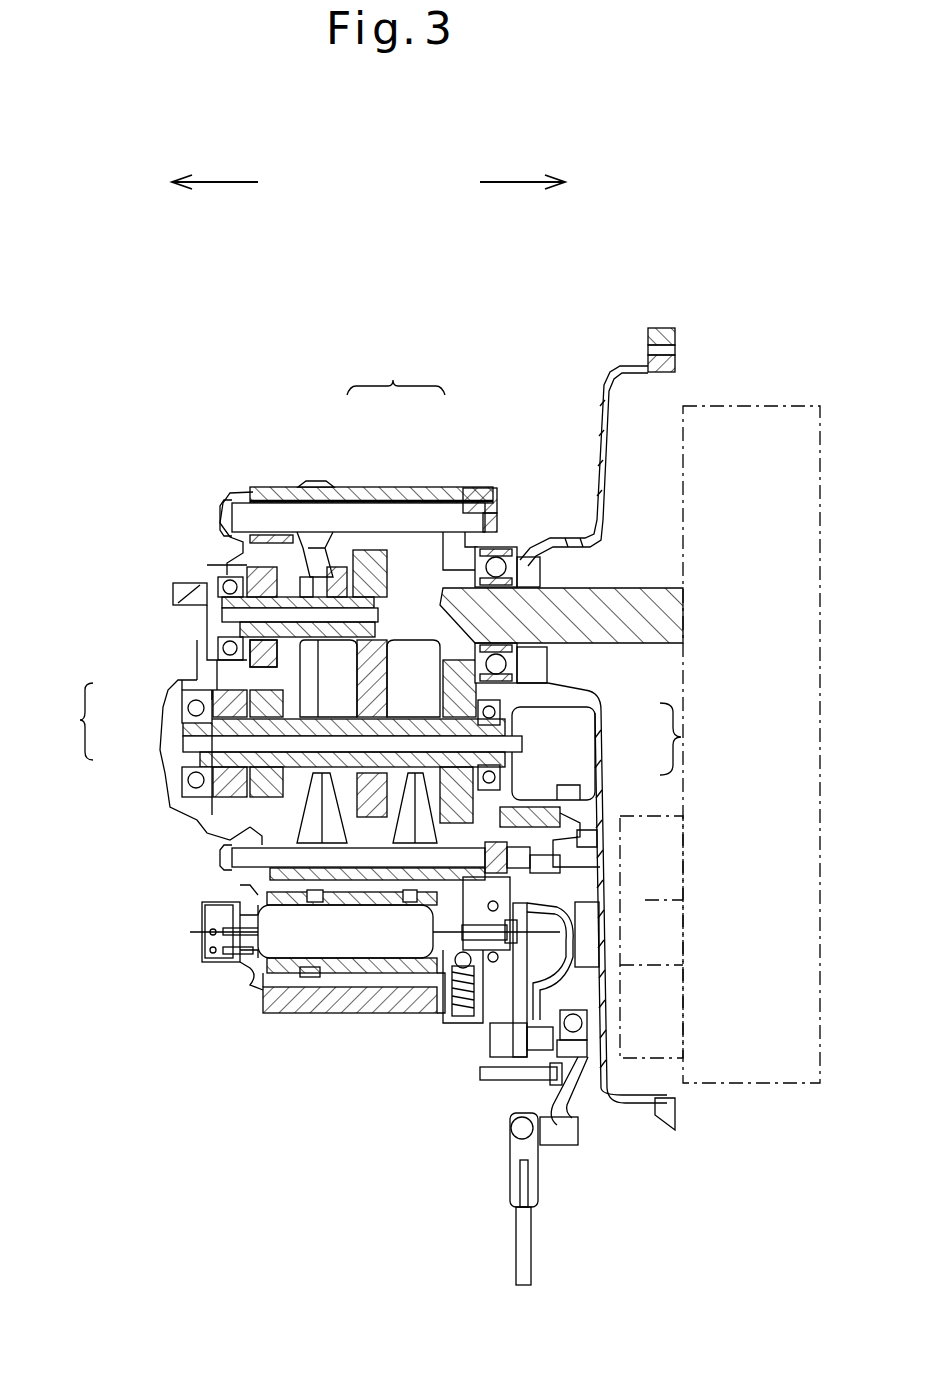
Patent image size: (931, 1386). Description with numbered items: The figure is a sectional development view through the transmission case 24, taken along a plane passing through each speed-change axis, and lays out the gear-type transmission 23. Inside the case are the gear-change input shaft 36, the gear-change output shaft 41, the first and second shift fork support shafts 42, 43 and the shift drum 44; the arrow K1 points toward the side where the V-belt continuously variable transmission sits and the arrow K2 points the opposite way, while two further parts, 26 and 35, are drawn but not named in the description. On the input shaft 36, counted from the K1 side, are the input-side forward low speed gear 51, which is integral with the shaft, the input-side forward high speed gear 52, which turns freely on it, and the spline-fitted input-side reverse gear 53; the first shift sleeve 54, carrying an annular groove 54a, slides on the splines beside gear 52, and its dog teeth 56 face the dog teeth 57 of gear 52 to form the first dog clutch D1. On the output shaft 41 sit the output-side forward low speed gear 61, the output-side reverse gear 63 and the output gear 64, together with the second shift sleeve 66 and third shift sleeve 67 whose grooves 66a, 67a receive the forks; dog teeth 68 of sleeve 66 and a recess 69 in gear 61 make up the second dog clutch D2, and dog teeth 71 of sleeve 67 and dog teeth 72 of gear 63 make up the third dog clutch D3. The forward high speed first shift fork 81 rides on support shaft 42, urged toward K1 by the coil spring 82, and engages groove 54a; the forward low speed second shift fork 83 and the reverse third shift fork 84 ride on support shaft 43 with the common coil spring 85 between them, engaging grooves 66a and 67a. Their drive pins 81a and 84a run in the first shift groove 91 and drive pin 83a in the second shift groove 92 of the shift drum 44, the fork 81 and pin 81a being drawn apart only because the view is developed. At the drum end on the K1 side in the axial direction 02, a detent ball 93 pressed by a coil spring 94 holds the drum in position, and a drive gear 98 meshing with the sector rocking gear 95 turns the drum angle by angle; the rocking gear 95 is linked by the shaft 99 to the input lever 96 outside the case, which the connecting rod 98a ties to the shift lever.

The cover 26 is at (620, 366).
The transmission case 24 is at (453, 487).
The gear-type transmission 23 is at (423, 486).
The first shift fork support shaft 42 is at (470, 492).
The input-side forward low speed gear 51 is at (462, 533).
The output shaft 35 is at (637, 600).
The input-side forward high speed gear 52 is at (360, 548).
The dog teeth 56 is at (337, 567).
The dog teeth 57 is at (367, 580).
The coil spring 82 is at (267, 490).
The first shift fork 81 is at (303, 533).
The annular groove 54a is at (232, 508).
The first shift sleeve 54 is at (273, 557).
The input-side reverse gear 53 is at (207, 564).
The gear-change input shaft 36 is at (215, 638).
The third shift sleeve 67 is at (378, 615).
The second shift sleeve 66 is at (445, 670).
The annular groove 66a is at (446, 694).
The annular groove 67a is at (338, 637).
The output-side forward low speed gear 61 is at (545, 668).
The dog teeth 72 is at (188, 705).
The dog teeth 71 is at (190, 722).
The recess 69 is at (507, 732).
The dog teeth 68 is at (507, 750).
The gear-change output shaft 41 is at (185, 745).
The output gear 64 is at (185, 818).
The output-side reverse gear 63 is at (225, 832).
The second shift fork 83 is at (540, 812).
The second shift fork support shaft 43 is at (230, 872).
The drive gear 98 is at (520, 902).
The third shift fork 84 is at (203, 890).
The drive pin 84a is at (320, 903).
The drive pin 83a is at (400, 907).
The axial direction 02 is at (200, 932).
The rocking gear 95 is at (513, 988).
The first shift groove 91 is at (260, 982).
The drive pin 81a is at (303, 973).
The common coil spring 85 is at (352, 880).
The shift drum 44 is at (360, 900).
The second shift groove 92 is at (410, 972).
The detent ball 93 is at (455, 1020).
The coil spring 94 is at (470, 1017).
The shaft 99 is at (540, 1040).
The input lever 96 is at (567, 1102).
The connecting rod 98a is at (516, 1232).
The first dog clutch D1 is at (396, 370).
The second dog clutch D2 is at (687, 739).
The third dog clutch D3 is at (70, 721).
The arrow K1 side K1 is at (522, 203).
The arrow K2 side K2 is at (215, 205).